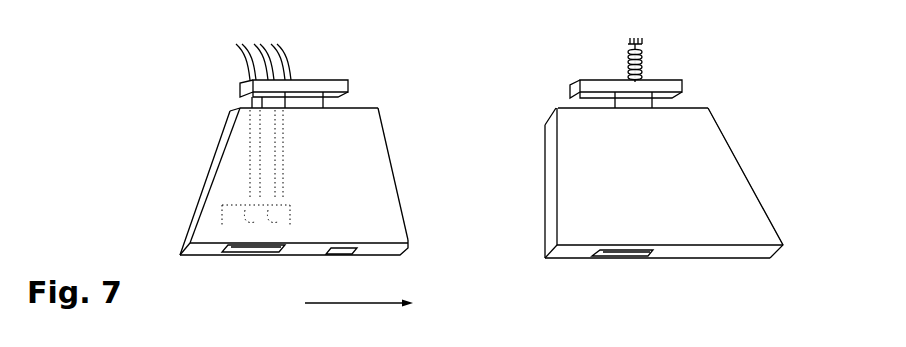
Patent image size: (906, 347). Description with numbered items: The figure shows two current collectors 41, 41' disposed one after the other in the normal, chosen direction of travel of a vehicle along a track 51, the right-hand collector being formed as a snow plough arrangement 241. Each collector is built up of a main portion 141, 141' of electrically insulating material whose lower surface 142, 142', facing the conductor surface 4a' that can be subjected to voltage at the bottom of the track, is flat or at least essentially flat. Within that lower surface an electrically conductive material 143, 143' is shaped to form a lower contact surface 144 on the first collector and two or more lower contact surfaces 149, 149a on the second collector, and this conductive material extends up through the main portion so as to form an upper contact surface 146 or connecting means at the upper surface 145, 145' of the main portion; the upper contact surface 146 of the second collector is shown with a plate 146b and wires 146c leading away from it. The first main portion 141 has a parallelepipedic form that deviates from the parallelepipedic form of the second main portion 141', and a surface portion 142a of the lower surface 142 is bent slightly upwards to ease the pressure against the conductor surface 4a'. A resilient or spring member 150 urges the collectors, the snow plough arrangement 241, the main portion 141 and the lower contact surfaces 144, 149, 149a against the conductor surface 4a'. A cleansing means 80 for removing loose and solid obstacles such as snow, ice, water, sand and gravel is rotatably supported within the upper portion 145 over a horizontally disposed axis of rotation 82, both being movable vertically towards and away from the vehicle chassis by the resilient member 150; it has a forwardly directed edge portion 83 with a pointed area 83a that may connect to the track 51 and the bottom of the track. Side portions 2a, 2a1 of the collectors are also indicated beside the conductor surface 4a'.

The wires 146c is at (242, 62).
The plate of connector 146b is at (353, 108).
The upper contact surface 146 is at (242, 100).
The upper surface of the main portion 145' is at (417, 155).
The current collector 41' is at (407, 174).
The main portion 141' is at (294, 181).
The electrically conductive material 143' is at (373, 201).
The side portion 2a1 is at (182, 183).
The track 51 is at (133, 253).
The lower contact surface 149 is at (235, 253).
The lower contact surface 149a is at (340, 256).
The lower surface 142' is at (321, 269).
The conductor surface 4a' is at (617, 248).
The resilient or spring member 150 is at (627, 63).
The axis of rotation 82 is at (657, 43).
The cleansing means 80 is at (657, 63).
The surface portion of the lower surface 142a is at (568, 108).
The upper surface of the main portion 145 is at (740, 158).
The current collector 41 is at (741, 174).
The snow plough arrangement 241 is at (752, 152).
The main portion 141 is at (664, 183).
The electrically conductive material 143 is at (721, 181).
The edge portion 83 is at (757, 197).
The side portion 2a is at (761, 176).
The lower contact surface 144 is at (623, 253).
The lower surface 142 is at (668, 276).
The pointed area 83a is at (775, 254).